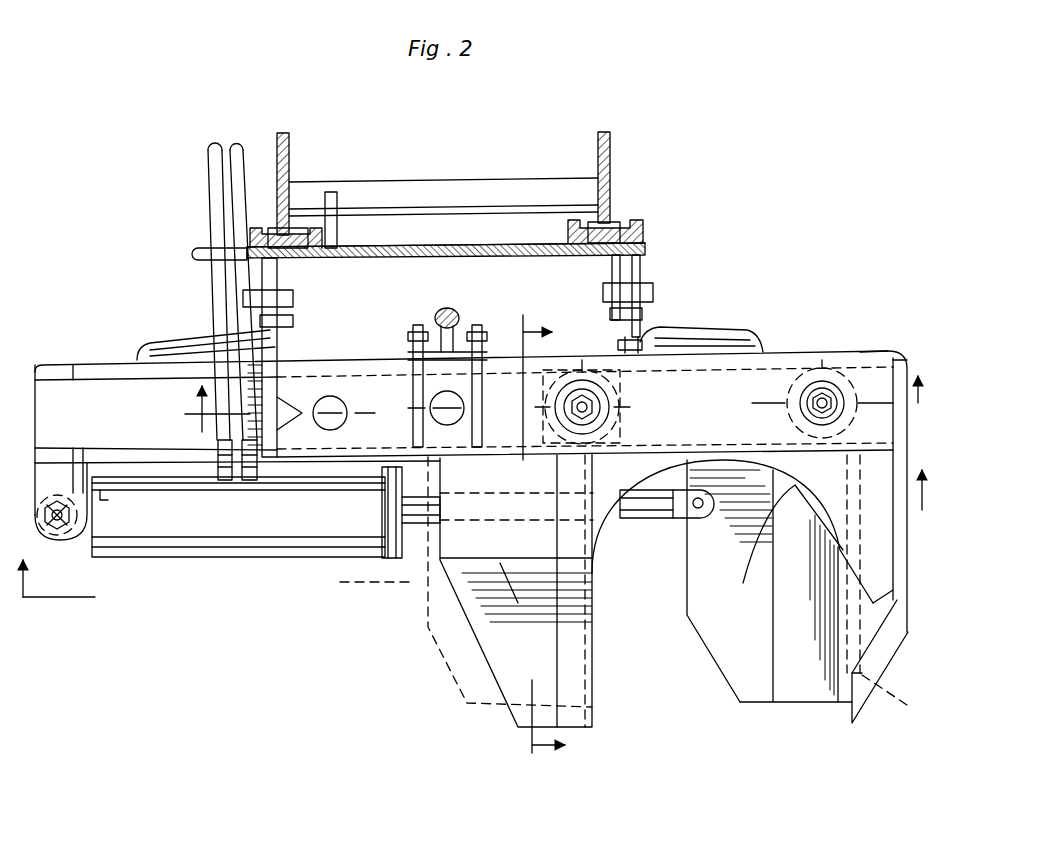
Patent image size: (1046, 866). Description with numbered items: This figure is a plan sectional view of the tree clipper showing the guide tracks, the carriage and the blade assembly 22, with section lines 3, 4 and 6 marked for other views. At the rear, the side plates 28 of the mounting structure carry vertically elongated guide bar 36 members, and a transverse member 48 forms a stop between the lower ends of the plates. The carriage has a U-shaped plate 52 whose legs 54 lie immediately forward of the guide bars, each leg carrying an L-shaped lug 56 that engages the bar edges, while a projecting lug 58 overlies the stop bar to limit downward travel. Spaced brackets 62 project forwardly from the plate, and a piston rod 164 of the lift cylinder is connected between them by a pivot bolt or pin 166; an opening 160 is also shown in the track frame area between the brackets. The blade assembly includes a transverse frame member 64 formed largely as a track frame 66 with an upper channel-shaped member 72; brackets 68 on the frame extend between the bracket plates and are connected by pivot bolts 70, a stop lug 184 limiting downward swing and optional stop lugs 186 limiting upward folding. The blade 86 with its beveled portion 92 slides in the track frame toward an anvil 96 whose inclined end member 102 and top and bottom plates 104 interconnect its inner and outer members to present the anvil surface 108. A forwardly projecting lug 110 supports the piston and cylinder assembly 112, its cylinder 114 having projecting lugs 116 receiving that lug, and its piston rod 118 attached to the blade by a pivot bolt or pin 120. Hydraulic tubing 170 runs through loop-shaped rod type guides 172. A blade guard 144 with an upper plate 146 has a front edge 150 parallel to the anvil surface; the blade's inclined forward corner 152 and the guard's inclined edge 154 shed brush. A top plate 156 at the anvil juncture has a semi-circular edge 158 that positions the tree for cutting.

The blade assembly 22 is at (789, 347).
The side plates 28 is at (610, 172).
The guide bar 36 is at (290, 236).
The transverse member 48 is at (482, 197).
The plate 52 is at (400, 250).
The legs 54 is at (646, 252).
The L-shaped lug 56 is at (250, 226).
The projecting lug 58 is at (334, 204).
The brackets 62 is at (278, 275).
The frame member 64 is at (64, 364).
The track frame 66 is at (859, 347).
The brackets 68 is at (620, 412).
The pivot bolts 70 is at (654, 293).
The upper channel-shaped member 72 is at (716, 422).
The blade 86 is at (745, 650).
The beveled portion 92 is at (805, 672).
The anvil 96 is at (910, 640).
The inclined end member 102 is at (886, 593).
The top and bottom plates 104 is at (887, 603).
The anvil surface 108 is at (850, 710).
The lug 110 is at (58, 480).
The piston and cylinder assembly 112 is at (244, 556).
The cylinder 114 is at (300, 527).
The projecting lugs 116 is at (88, 519).
The piston rod 118 is at (646, 520).
The pivot bolt or pin 120 is at (700, 520).
The blade guard 144 is at (488, 666).
The upper plate 146 is at (520, 680).
The front edge 150 is at (597, 660).
The inclined forward corner 152 is at (700, 640).
The inclined edge 154 is at (443, 648).
The top plate 156 is at (832, 476).
The semi-circular edge 158 is at (762, 572).
The hole 160 is at (413, 405).
The piston rod 164 is at (452, 308).
The pivot bolt or pin 166 is at (413, 332).
The tubing 170 is at (212, 178).
The rod type guides 172 is at (196, 253).
The stop lug 184 is at (293, 321).
The stop lugs 186 is at (660, 340).
The section line 3 is at (470, 518).
The section line 4 is at (555, 538).
The section line 6 is at (550, 389).